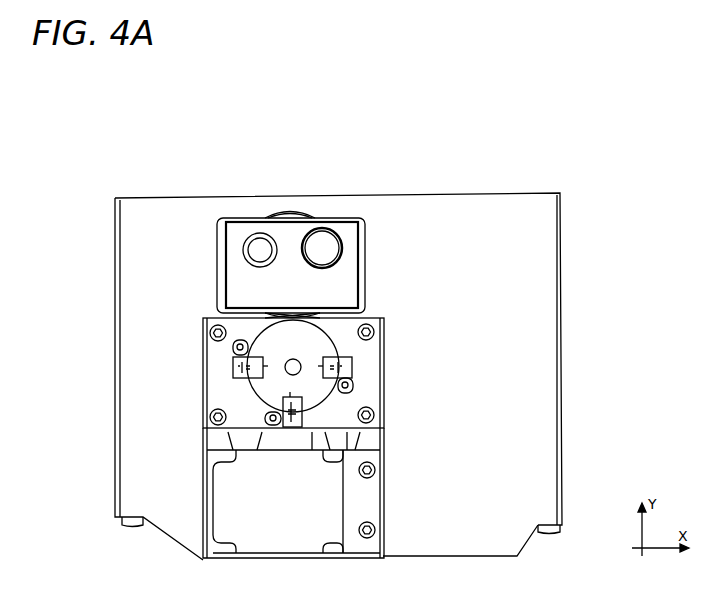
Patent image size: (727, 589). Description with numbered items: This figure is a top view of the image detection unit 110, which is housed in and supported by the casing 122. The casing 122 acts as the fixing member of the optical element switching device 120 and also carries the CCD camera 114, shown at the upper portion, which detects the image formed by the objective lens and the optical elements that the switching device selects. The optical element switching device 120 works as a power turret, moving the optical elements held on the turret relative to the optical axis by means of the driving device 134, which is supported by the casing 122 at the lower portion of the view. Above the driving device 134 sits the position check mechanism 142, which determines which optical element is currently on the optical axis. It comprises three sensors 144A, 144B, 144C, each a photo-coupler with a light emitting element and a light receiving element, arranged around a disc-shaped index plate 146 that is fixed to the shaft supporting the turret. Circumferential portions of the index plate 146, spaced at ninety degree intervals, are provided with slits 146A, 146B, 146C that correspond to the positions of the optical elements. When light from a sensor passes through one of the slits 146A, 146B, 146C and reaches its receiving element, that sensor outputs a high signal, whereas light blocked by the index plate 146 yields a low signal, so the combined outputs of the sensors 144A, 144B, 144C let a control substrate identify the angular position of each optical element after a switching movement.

The image detection unit 110 is at (265, 178).
The casing 122 is at (407, 208).
The CCD camera 114 is at (348, 258).
The optical element switching device 120 is at (404, 332).
The position check mechanism 142 is at (348, 333).
The driving device 134 is at (335, 508).
The sensor 144A is at (352, 361).
The sensor 144B is at (302, 418).
The sensor 144C is at (233, 362).
The index plate 146 is at (233, 348).
The slit 146A is at (352, 371).
The slit 146B is at (303, 409).
The slit 146C is at (240, 368).